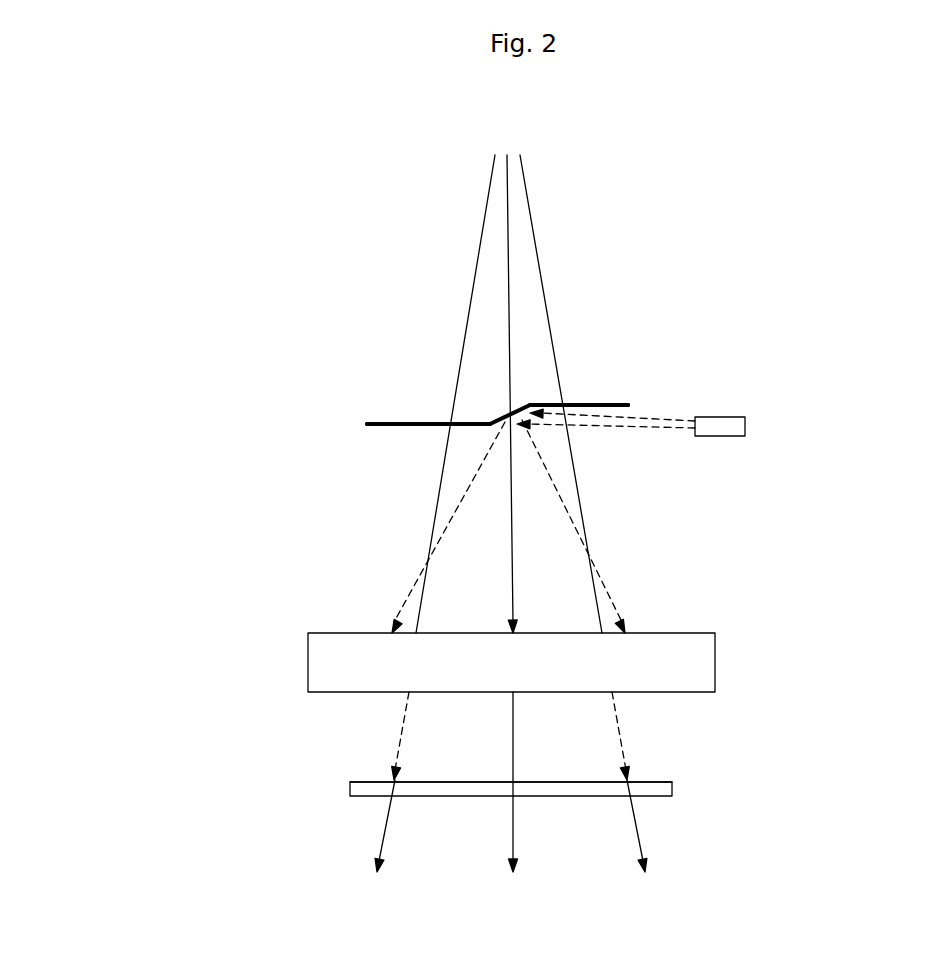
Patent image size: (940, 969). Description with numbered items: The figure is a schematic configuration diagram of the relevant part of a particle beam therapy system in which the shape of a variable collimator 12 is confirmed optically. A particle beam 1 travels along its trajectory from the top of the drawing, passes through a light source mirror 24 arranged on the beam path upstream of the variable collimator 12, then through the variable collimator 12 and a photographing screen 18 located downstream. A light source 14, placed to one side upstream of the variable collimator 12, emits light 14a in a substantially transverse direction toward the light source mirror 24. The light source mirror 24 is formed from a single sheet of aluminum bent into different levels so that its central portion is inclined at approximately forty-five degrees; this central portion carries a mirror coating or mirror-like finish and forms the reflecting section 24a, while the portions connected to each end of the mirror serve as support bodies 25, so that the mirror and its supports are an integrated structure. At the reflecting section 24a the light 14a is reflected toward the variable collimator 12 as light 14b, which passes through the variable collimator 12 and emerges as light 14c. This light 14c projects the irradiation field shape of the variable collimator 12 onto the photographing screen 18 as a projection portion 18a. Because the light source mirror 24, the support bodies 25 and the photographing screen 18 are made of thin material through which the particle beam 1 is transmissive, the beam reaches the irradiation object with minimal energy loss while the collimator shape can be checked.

The particle beam 1 is at (490, 190).
The variable collimator 12 is at (716, 668).
The light source 14 is at (745, 424).
The light 14a is at (623, 419).
The light 14b is at (408, 600).
The light 14c is at (402, 733).
The photographing screen 18 is at (672, 788).
The projection portion 18a is at (442, 782).
The light source mirror 24 is at (510, 417).
The reflecting section 24a is at (530, 420).
The support bodies 25 is at (417, 424).